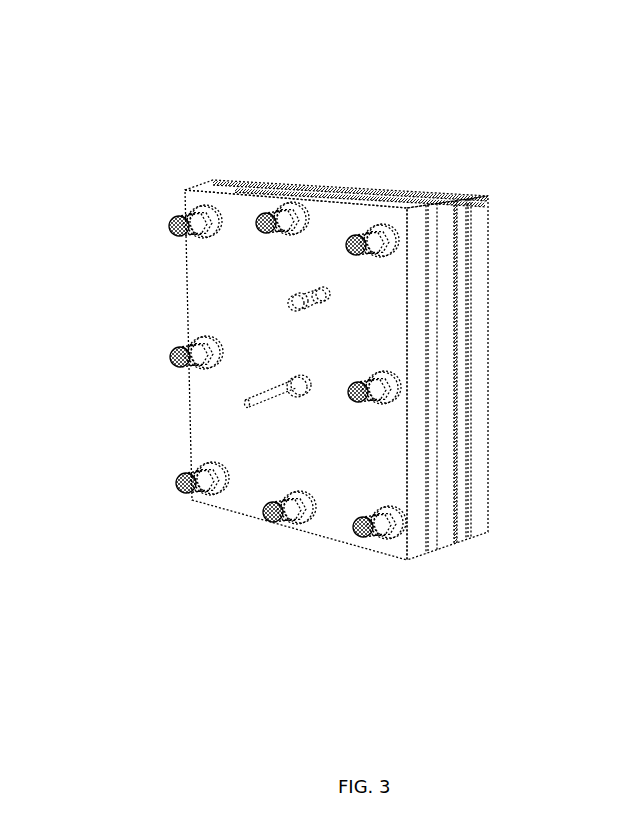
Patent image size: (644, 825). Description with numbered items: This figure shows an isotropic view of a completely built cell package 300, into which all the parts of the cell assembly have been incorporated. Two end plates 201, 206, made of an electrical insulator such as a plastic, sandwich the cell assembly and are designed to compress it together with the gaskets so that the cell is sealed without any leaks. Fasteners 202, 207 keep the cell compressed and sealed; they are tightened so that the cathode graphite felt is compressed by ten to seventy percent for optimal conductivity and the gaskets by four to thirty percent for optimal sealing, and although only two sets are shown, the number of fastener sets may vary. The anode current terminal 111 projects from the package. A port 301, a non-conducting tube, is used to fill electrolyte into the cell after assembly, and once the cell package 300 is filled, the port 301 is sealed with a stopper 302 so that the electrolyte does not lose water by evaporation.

The cell package 300 is at (82, 70).
The end plate 201 is at (193, 190).
The end plate 206 is at (293, 178).
The fastener 202 is at (488, 363).
The fastener 207 is at (388, 400).
The port 301 is at (313, 290).
The stopper 302 is at (290, 308).
The anode current terminal 111 is at (243, 403).